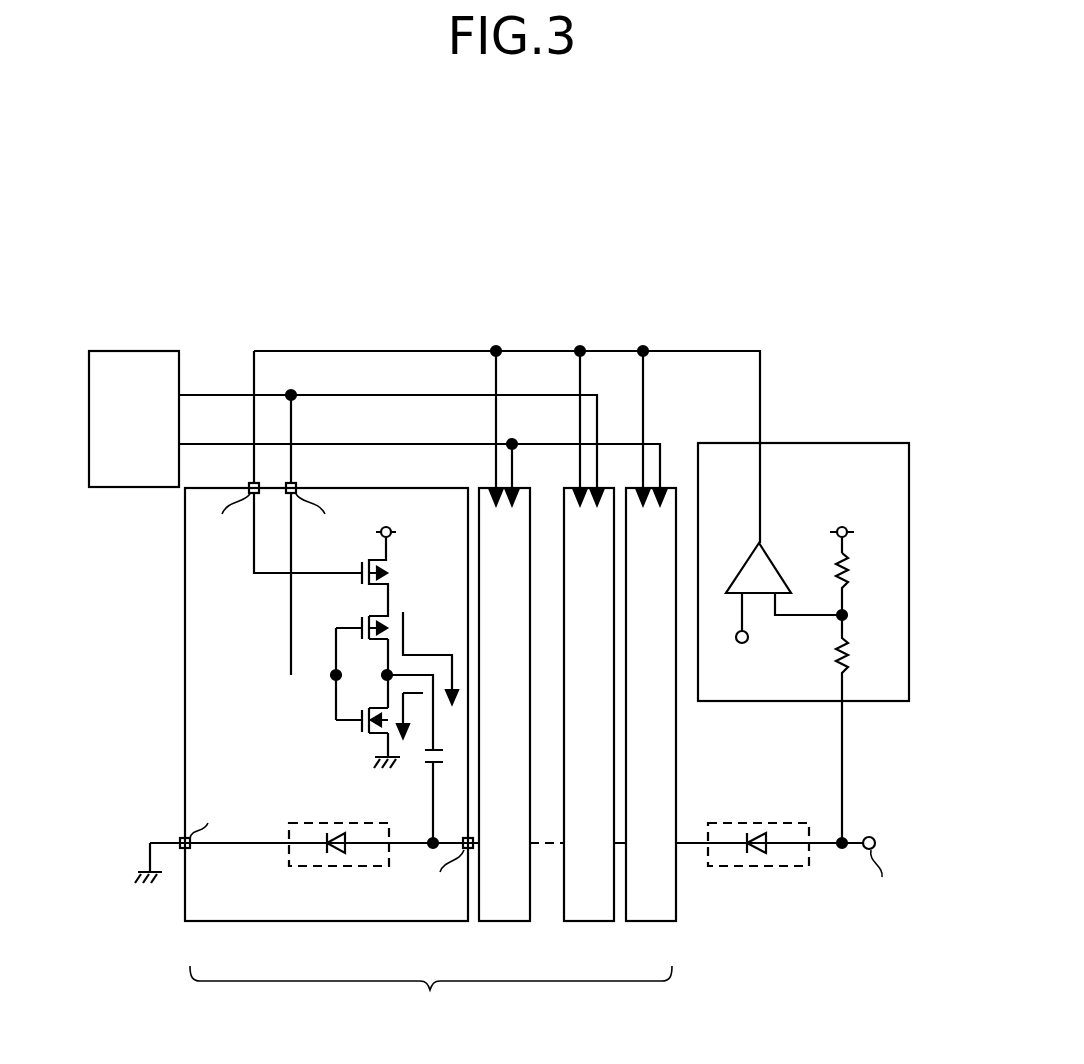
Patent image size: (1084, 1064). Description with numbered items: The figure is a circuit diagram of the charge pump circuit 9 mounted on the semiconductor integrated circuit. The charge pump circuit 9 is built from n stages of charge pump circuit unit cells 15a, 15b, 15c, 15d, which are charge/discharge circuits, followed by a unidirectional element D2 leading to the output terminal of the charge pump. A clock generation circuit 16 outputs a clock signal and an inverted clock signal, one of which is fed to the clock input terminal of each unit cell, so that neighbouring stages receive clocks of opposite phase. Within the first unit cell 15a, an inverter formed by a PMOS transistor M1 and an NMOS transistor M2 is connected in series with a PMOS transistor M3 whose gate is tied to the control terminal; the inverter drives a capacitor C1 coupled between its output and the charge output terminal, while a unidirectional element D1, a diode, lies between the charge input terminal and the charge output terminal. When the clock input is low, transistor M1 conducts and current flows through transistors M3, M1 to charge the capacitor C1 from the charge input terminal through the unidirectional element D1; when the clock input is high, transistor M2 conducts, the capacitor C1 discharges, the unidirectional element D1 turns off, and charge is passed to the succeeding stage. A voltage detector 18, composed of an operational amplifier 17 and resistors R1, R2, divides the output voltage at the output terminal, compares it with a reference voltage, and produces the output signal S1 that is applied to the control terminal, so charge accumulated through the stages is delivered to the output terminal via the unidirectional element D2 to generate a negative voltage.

The charge pump circuit 9 is at (518, 658).
The clock generation circuit 16 is at (135, 351).
The operational amplifier 17 is at (752, 549).
The voltage detector 18 is at (803, 617).
The charge pump circuit unit cell 15a is at (330, 727).
The charge pump circuit unit cell 15b is at (504, 921).
The charge pump circuit unit cell 15c is at (590, 921).
The charge pump circuit unit cell 15d is at (651, 921).
The output signal S1 is at (715, 351).
The PMOS transistor M1 is at (362, 618).
The NMOS transistor M2 is at (362, 734).
The PMOS transistor M3 is at (364, 563).
The capacitor C1 is at (450, 796).
The unidirectional element D1 is at (339, 829).
The unidirectional element D2 is at (758, 829).
The resistor R1 is at (860, 584).
The resistor R2 is at (860, 729).